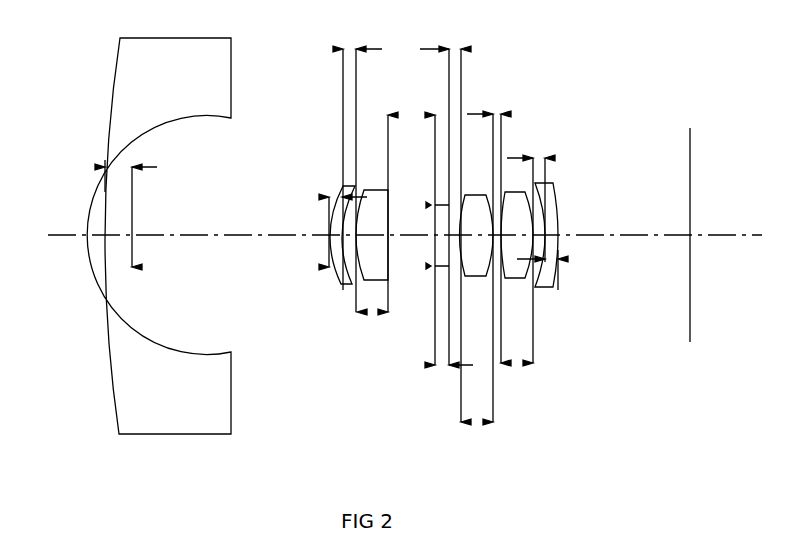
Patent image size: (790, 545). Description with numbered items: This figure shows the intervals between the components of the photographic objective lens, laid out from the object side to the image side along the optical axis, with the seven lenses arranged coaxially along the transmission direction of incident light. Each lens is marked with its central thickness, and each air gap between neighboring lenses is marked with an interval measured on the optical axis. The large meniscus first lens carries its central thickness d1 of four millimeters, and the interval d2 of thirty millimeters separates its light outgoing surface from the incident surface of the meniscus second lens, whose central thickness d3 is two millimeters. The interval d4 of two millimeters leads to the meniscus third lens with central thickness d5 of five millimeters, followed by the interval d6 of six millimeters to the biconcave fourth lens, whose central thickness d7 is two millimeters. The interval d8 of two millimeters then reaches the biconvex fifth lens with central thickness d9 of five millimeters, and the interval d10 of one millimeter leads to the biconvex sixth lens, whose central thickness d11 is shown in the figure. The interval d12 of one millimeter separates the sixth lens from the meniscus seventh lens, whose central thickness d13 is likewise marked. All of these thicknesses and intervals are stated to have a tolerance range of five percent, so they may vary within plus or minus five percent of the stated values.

The central thickness of the first lens d1 is at (105, 167).
The interval between the first lens and the second lens d2 is at (322, 267).
The central thickness of the second lens d3 is at (320, 197).
The interval between the second lens and the third lens d4 is at (334, 49).
The central thickness of the third lens d5 is at (388, 312).
The interval between the third lens and the fourth lens d6 is at (435, 115).
The central thickness of the fourth lens d7 is at (435, 365).
The interval between the fourth lens and the fifth lens d8 is at (461, 49).
The central thickness of the fifth lens d9 is at (461, 422).
The interval between the fifth lens and the sixth lens d10 is at (501, 114).
The center thickness of fifth lens d11 is at (501, 363).
The interval between the sixth lens and the seventh lens d12 is at (545, 158).
The center thickness of sixth lens d13 is at (558, 259).